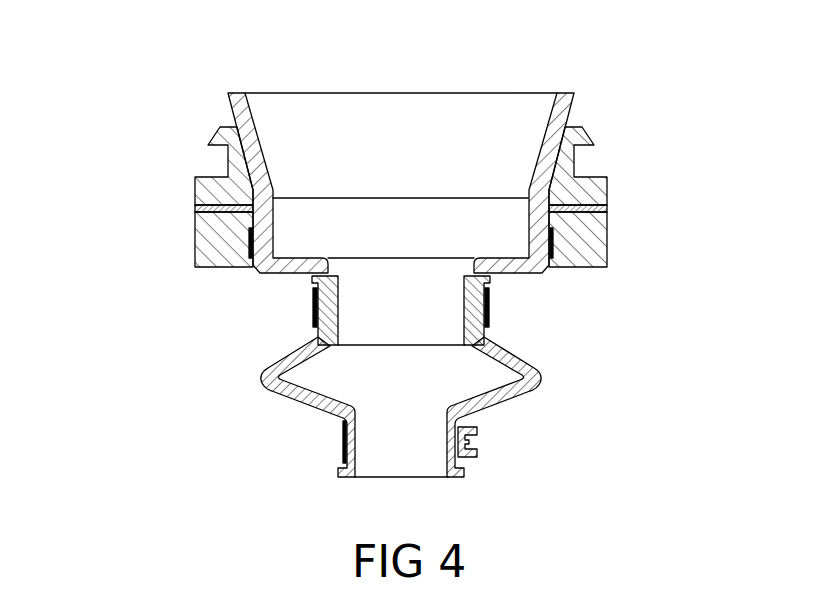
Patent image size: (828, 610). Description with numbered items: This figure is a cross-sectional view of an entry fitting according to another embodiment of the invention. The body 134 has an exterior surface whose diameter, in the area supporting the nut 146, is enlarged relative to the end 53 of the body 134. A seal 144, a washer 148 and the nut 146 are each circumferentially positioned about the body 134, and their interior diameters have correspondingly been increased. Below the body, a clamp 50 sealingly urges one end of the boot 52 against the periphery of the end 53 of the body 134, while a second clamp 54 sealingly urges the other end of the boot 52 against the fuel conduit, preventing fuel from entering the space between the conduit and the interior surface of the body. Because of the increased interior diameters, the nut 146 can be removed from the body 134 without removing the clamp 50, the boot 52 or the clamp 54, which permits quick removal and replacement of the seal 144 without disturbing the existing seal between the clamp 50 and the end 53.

The body 134 is at (573, 93).
The seal 144 is at (607, 193).
The nut 146 is at (607, 232).
The washer 148 is at (195, 207).
The clamp 50 is at (490, 305).
The boot 52 is at (536, 372).
The end of body 53 is at (417, 343).
The clamp 54 is at (478, 442).